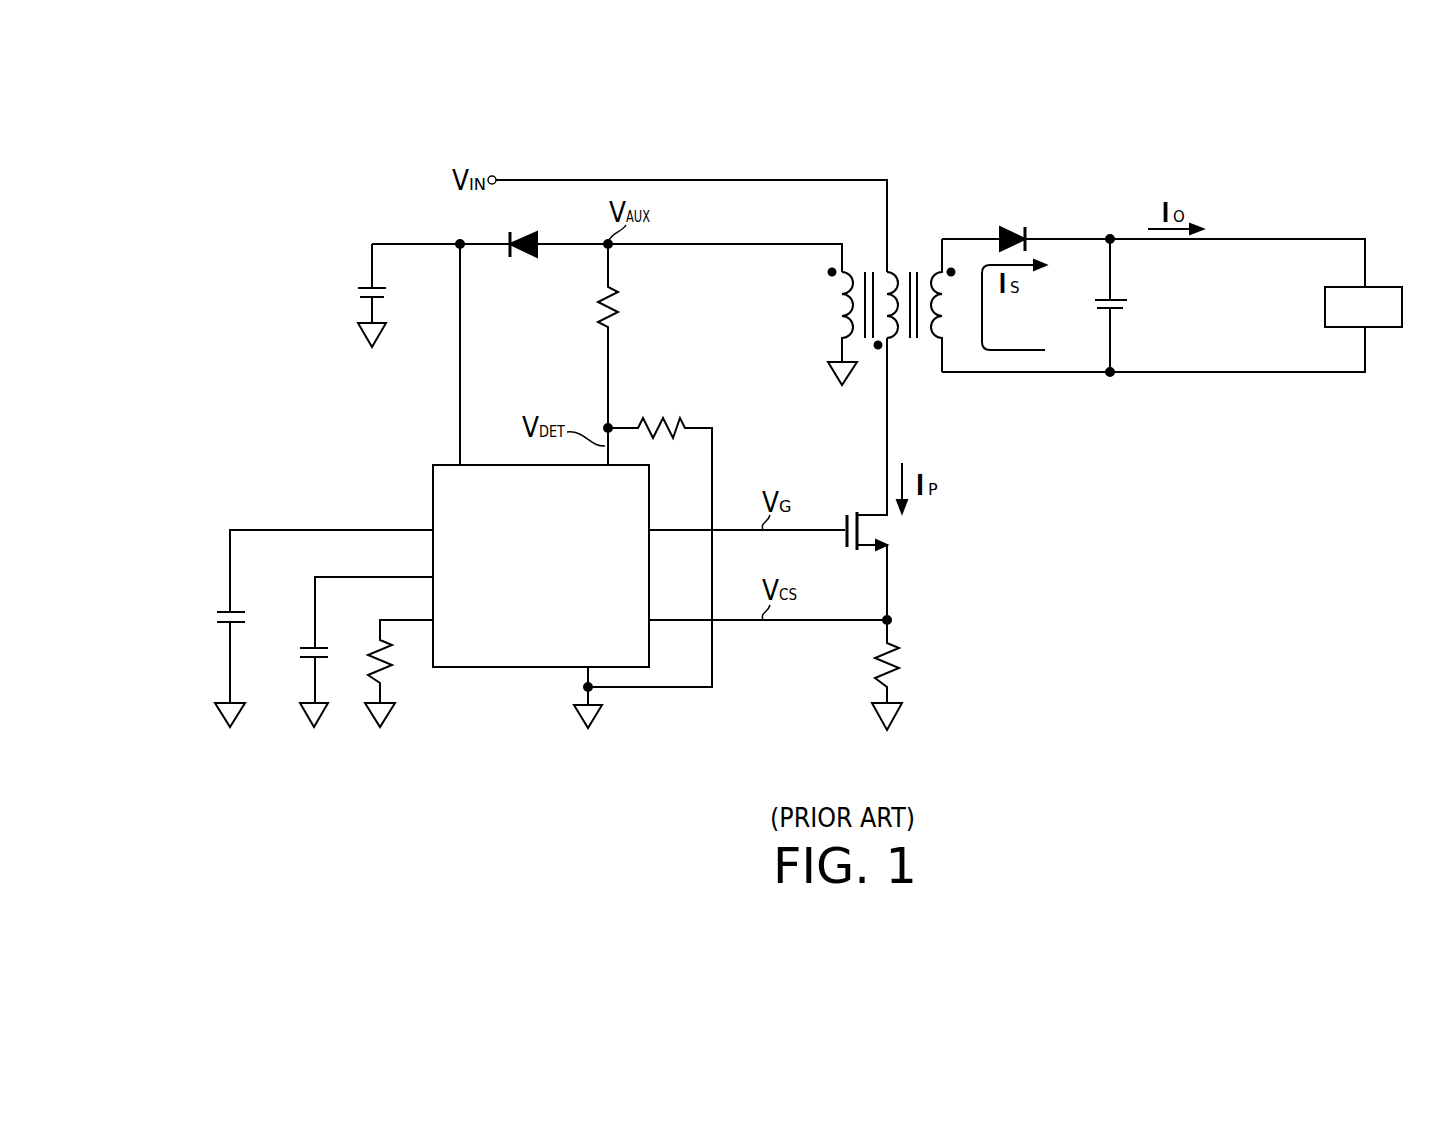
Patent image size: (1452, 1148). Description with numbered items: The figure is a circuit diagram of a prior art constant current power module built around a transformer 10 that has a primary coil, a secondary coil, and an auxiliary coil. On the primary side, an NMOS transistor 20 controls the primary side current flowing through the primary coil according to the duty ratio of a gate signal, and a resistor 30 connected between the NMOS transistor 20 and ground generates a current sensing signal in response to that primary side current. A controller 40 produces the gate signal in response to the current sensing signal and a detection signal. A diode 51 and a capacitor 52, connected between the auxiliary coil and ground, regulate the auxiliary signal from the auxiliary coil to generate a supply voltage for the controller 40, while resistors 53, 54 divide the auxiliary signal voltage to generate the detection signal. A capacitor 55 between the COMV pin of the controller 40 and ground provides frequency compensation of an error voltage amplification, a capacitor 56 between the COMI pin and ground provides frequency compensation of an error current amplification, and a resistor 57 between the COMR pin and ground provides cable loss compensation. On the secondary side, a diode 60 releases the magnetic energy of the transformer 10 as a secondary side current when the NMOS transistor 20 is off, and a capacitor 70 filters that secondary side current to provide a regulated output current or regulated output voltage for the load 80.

The transformer 10 is at (910, 265).
The NMOS transistor 20 is at (898, 530).
The resistor 30 is at (898, 668).
The controller 40 is at (507, 464).
The diode 51 is at (517, 260).
The capacitor 52 is at (358, 293).
The resistor 53 is at (617, 311).
The resistor 54 is at (678, 427).
The capacitor 55 is at (215, 616).
The capacitor 56 is at (300, 652).
The resistor 57 is at (370, 657).
The diode 60 is at (1020, 237).
The capacitor 70 is at (1131, 302).
The load 80 is at (1382, 287).